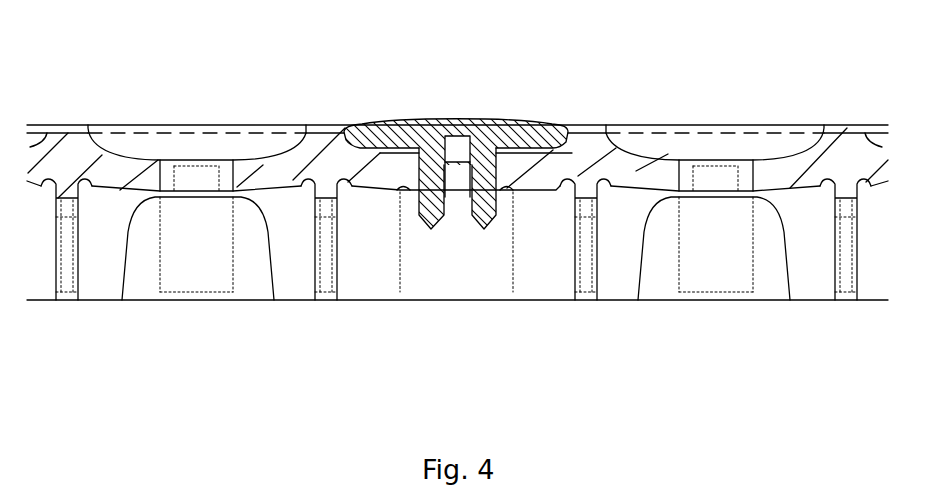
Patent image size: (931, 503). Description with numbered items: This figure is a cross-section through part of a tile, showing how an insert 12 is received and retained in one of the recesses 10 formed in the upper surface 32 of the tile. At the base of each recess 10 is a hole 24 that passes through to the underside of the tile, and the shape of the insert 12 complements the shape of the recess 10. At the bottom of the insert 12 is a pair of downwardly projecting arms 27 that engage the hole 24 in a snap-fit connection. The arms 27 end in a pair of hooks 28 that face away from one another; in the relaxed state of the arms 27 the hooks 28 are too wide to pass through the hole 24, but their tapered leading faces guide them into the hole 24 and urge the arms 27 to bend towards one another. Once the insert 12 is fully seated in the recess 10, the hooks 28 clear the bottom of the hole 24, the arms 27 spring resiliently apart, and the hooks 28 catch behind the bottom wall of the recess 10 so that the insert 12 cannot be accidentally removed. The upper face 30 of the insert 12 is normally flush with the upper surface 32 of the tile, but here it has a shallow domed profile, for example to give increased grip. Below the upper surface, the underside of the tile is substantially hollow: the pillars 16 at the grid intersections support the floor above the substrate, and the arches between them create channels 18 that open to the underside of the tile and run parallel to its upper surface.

The recess 10 is at (157, 142).
The insert 12 is at (470, 212).
The pillar 16 is at (615, 222).
The channel 18 is at (192, 242).
The hole 24 is at (458, 177).
The arm 27 is at (476, 196).
The hook 28 is at (487, 223).
The upper face 30 is at (535, 123).
The upper surface 32 is at (324, 130).